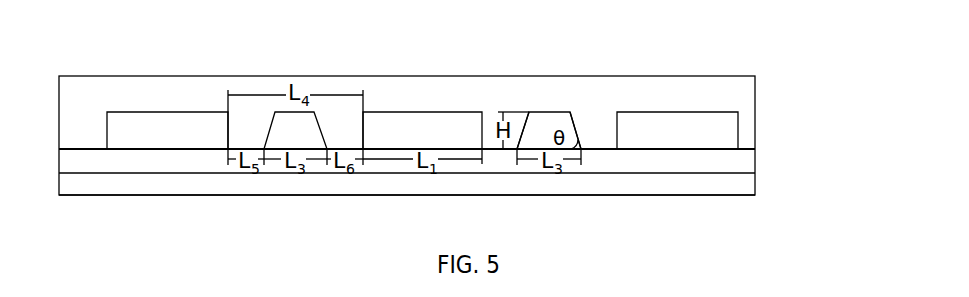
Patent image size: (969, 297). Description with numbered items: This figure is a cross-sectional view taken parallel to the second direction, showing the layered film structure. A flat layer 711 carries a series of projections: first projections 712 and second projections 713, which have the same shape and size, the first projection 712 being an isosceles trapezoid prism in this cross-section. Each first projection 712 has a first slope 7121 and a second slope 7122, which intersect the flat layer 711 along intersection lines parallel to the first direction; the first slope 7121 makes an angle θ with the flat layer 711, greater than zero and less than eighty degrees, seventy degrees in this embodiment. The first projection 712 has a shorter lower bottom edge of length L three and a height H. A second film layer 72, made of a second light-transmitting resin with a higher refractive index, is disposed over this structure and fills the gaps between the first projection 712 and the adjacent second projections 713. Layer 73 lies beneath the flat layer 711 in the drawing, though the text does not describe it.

The second film layer 72 is at (449, 135).
The flat layer 711 is at (449, 151).
The reflective layer 73 is at (449, 179).
The first projection 712 is at (593, 74).
The first slope 7121 is at (630, 91).
The second slope 7122 is at (461, 78).
The second projection 713 is at (712, 74).